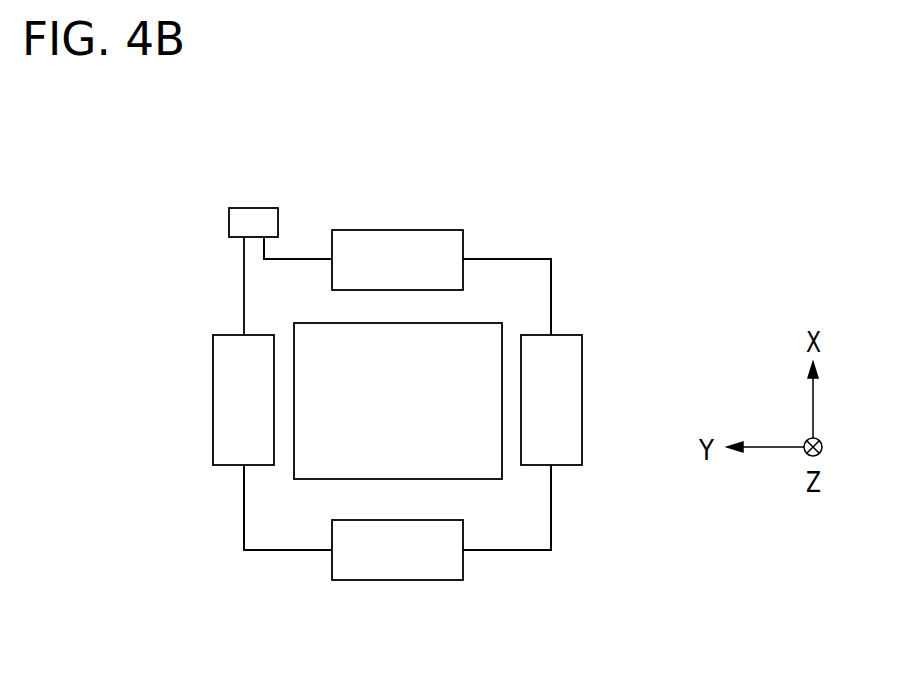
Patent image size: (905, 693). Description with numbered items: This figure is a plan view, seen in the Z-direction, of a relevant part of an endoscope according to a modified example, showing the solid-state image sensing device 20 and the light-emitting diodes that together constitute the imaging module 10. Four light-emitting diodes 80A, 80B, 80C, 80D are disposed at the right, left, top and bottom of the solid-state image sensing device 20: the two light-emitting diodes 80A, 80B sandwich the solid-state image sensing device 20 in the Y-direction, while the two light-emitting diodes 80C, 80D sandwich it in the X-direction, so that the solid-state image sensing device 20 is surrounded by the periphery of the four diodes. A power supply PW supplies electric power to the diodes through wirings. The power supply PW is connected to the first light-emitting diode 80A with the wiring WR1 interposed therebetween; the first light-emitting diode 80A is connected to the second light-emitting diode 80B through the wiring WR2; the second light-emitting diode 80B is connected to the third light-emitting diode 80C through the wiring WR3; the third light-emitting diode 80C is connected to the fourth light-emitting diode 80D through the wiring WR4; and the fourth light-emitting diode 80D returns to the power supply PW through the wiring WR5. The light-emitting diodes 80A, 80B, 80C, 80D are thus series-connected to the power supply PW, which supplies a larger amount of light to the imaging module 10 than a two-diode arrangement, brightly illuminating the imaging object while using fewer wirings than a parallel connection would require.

The imaging module 10 is at (576, 270).
The solid-state image sensing device 20 is at (478, 471).
The power supply PW is at (248, 207).
The wiring WR1 is at (302, 259).
The wiring WR2 is at (551, 300).
The wiring WR3 is at (530, 552).
The wiring WR4 is at (278, 552).
The wiring WR5 is at (242, 302).
The first light-emitting diode 80A is at (413, 237).
The second light-emitting diode 80B is at (570, 452).
The third light-emitting diode 80C is at (415, 582).
The fourth light-emitting diode 80D is at (223, 457).